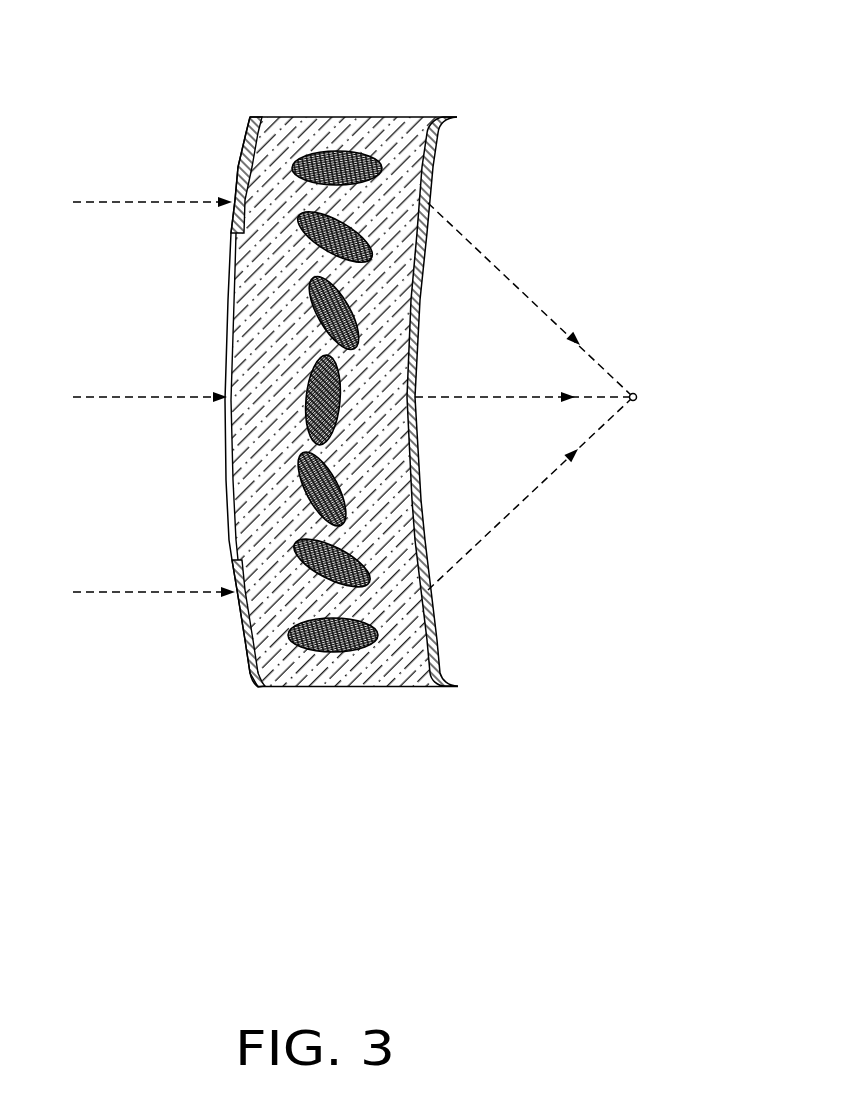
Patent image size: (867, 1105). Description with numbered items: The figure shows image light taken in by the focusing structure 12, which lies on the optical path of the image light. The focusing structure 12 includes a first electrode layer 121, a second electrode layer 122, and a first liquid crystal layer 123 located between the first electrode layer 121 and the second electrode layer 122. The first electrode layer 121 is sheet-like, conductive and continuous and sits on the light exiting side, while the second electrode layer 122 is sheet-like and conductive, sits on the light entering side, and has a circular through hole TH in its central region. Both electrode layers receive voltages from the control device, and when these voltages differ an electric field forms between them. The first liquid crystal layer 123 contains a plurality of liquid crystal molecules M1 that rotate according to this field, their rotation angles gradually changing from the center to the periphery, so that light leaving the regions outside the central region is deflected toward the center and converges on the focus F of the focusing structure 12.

The focusing structure 12 is at (342, 401).
The first electrode layer 121 is at (432, 613).
The second electrode layer 122 is at (209, 434).
The first liquid crystal layer 123 is at (397, 688).
The through hole TH is at (222, 383).
The liquid crystal molecules M1 is at (325, 634).
The focus F is at (648, 398).